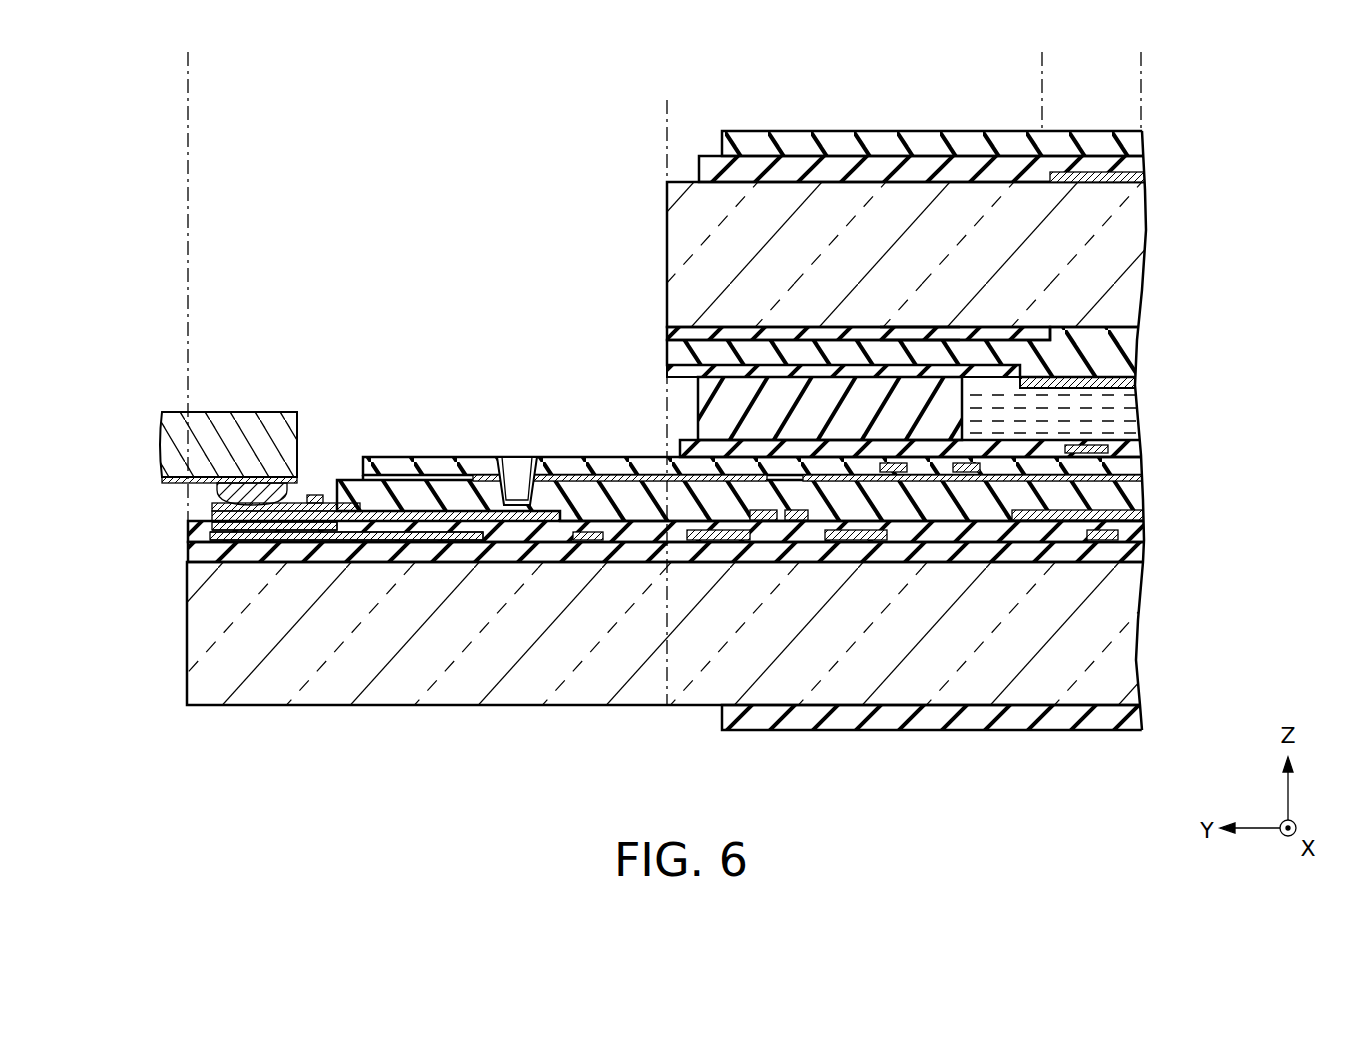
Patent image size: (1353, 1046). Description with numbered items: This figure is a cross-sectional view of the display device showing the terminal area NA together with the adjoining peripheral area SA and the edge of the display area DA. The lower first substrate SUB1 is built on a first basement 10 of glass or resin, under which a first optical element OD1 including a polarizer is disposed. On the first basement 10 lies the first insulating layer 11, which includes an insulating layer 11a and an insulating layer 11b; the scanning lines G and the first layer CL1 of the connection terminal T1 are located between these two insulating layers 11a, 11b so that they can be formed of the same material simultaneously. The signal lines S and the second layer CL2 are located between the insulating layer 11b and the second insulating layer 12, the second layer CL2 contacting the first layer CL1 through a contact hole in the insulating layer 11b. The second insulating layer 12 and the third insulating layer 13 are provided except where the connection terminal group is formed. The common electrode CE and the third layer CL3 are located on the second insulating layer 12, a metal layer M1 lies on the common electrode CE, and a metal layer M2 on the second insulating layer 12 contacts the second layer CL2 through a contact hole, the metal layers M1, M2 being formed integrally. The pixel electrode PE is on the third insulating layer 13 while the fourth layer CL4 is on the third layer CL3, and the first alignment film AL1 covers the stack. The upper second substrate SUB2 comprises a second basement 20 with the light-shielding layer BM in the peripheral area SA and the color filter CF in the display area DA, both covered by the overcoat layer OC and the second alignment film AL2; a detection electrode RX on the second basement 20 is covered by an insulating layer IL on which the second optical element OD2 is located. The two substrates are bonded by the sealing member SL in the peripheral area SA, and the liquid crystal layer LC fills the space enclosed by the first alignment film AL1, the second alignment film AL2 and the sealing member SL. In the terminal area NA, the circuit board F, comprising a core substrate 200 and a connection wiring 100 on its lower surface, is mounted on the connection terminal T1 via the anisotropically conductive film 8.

The peripheral area SA is at (1042, 59).
The display area DA is at (1141, 59).
The terminal area NA is at (667, 129).
The second substrate SUB2 is at (965, 264).
The second basement 20 is at (1128, 231).
The second optical element OD2 is at (1143, 147).
The insulating layer IL is at (1143, 165).
The detection electrode RX is at (1110, 178).
The color filter CF is at (1113, 342).
The light-shielding layer BM is at (920, 333).
The overcoat layer OC is at (1123, 363).
The second alignment film AL2 is at (1123, 380).
The sealing member SL is at (950, 415).
The liquid crystal layer LC is at (1127, 418).
The first substrate SUB1 is at (741, 461).
The first basement 10 is at (1117, 610).
The first optical element OD1 is at (1130, 717).
The first insulating layer 11 is at (742, 567).
The insulating layer 11a is at (1125, 553).
The insulating layer 11b is at (1133, 530).
The scanning line G is at (1100, 542).
The second insulating layer 12 is at (1123, 492).
The signal line S is at (1045, 520).
The third insulating layer 13 is at (1127, 463).
The common electrode CE is at (1007, 481).
The metal layer M2 is at (568, 477).
The metal layer M1 is at (893, 473).
The first alignment film AL1 is at (1127, 448).
The pixel electrode PE is at (1080, 447).
The connection terminal T1 is at (385, 646).
The first layer CL1 is at (297, 540).
The second layer CL2 is at (277, 530).
The third layer CL3 is at (252, 521).
The fourth layer CL4 is at (232, 525).
The circuit board F is at (190, 407).
The core substrate 200 is at (180, 445).
The connection wiring 100 is at (195, 479).
The anisotropically conductive film 8 is at (220, 490).